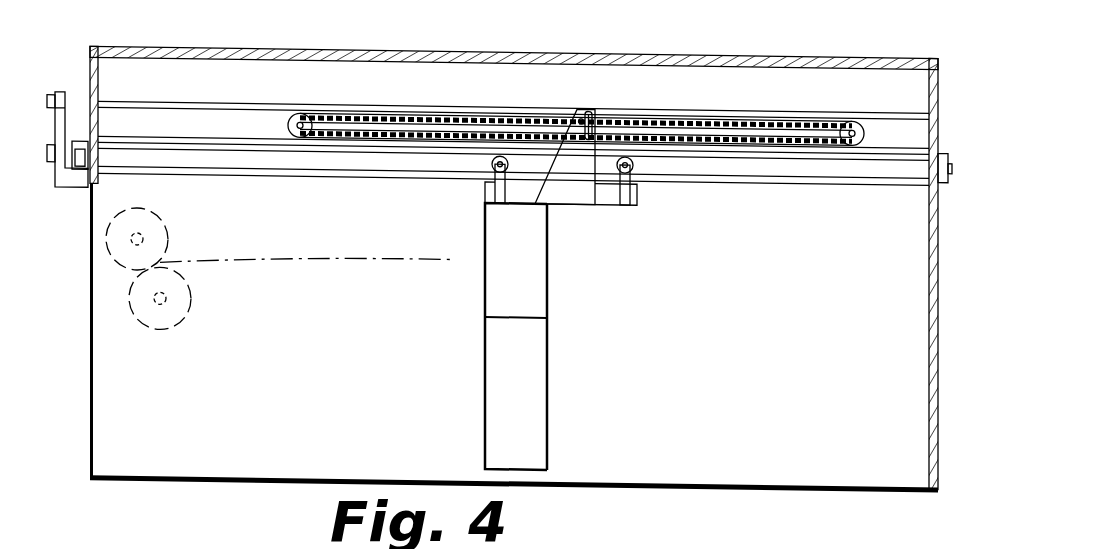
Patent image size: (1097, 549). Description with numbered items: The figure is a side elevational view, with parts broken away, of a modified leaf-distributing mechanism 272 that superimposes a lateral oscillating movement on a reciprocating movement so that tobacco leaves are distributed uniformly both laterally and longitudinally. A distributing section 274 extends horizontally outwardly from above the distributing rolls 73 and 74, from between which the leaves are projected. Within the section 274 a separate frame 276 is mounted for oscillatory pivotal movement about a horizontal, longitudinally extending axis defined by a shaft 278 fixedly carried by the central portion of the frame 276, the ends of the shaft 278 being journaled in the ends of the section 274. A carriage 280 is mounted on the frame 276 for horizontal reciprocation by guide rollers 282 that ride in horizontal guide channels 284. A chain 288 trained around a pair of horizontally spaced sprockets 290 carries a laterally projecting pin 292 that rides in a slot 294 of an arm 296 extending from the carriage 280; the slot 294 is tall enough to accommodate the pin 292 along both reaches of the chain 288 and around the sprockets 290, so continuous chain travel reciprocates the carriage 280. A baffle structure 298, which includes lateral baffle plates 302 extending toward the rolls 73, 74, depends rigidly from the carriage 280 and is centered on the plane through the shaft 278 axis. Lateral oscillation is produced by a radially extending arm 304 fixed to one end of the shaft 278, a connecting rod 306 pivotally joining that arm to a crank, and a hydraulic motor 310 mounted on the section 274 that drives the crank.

The leaf-distributing mechanism 272 is at (950, 42).
The distributing section 274 is at (532, 44).
The frame 276 is at (230, 124).
The shaft 278 is at (72, 139).
The carriage 280 is at (600, 188).
The guide rollers 282 is at (493, 160).
The guide channels 284 is at (830, 161).
The chain 288 is at (742, 107).
The sprockets 290 is at (312, 109).
The pin 292 is at (595, 108).
The slot 294 is at (583, 110).
The arm 296 is at (575, 158).
The baffle structure 298 is at (549, 338).
The lateral baffle plates 302 is at (497, 391).
The arm 304 is at (72, 127).
The connecting rod 306 is at (52, 94).
The hydraulic motor 310 is at (83, 180).
The distributing roll 74 is at (152, 238).
The distributing roll 73 is at (222, 297).